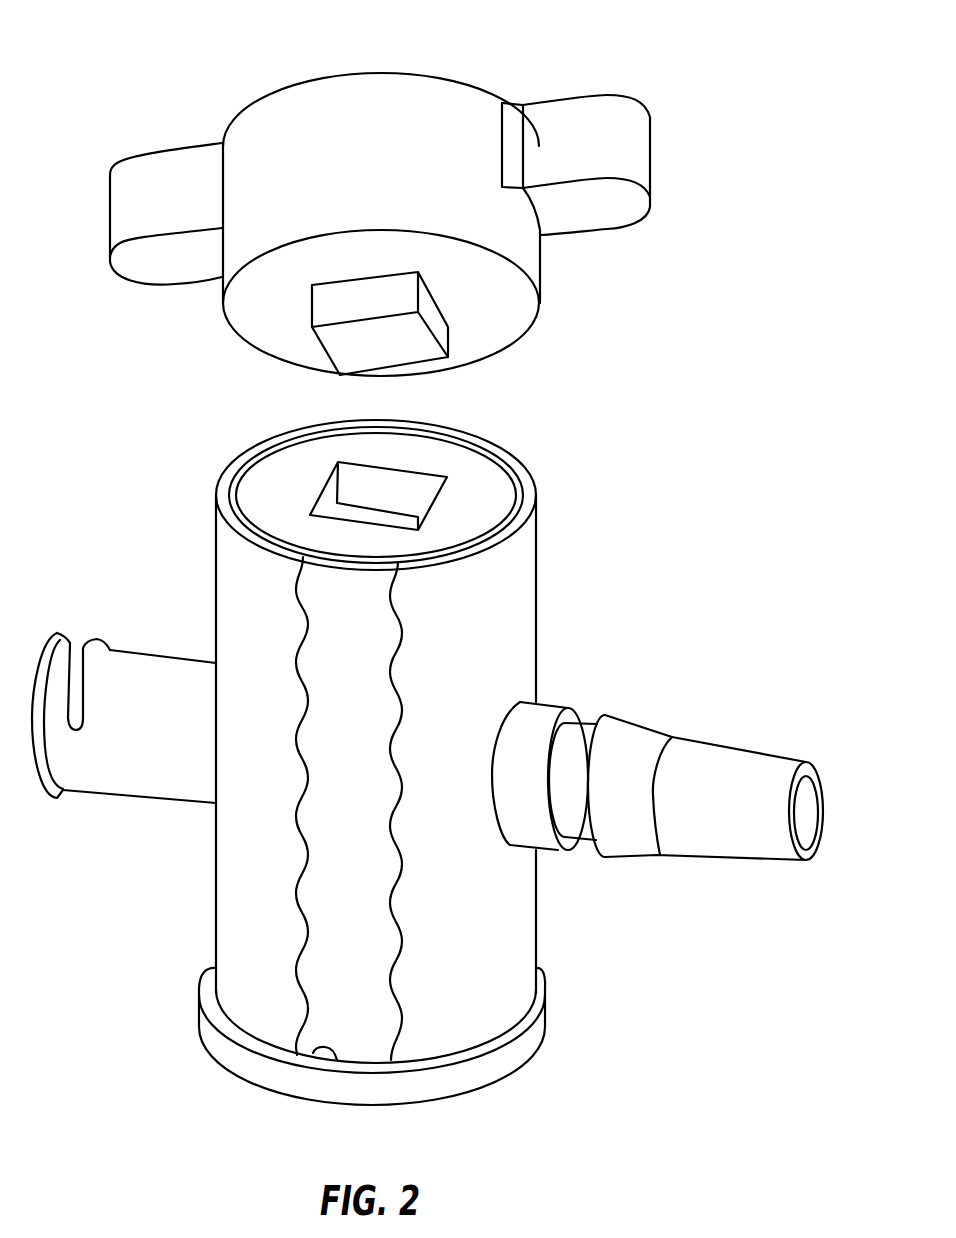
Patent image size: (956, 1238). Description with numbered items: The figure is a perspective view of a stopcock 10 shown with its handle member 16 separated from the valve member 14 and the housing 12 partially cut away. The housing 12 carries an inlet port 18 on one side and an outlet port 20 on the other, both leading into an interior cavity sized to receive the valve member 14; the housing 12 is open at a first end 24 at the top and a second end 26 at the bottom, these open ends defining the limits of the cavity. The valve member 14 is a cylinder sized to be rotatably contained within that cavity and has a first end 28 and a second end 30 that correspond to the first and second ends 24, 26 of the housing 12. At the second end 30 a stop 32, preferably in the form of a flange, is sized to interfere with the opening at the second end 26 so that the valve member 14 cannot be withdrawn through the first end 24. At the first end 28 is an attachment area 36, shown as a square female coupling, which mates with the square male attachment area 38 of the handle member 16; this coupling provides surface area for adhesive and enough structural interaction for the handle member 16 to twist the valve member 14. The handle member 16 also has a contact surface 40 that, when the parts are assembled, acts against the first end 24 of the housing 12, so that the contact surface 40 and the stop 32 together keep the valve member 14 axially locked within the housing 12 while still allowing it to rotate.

The stopcock 10 is at (176, 62).
The housing 12 is at (518, 573).
The valve member 14 is at (475, 455).
The handle member 16 is at (640, 140).
The inlet port 18 is at (175, 790).
The outlet port 20 is at (730, 760).
The first end 24 is at (533, 481).
The second end 26 is at (535, 934).
The first end 28 is at (270, 478).
The second end 30 is at (498, 1073).
The stop 32 is at (315, 1053).
The attachment area 36 is at (392, 484).
The attachment area 38 is at (318, 352).
The contact surface 40 is at (493, 320).